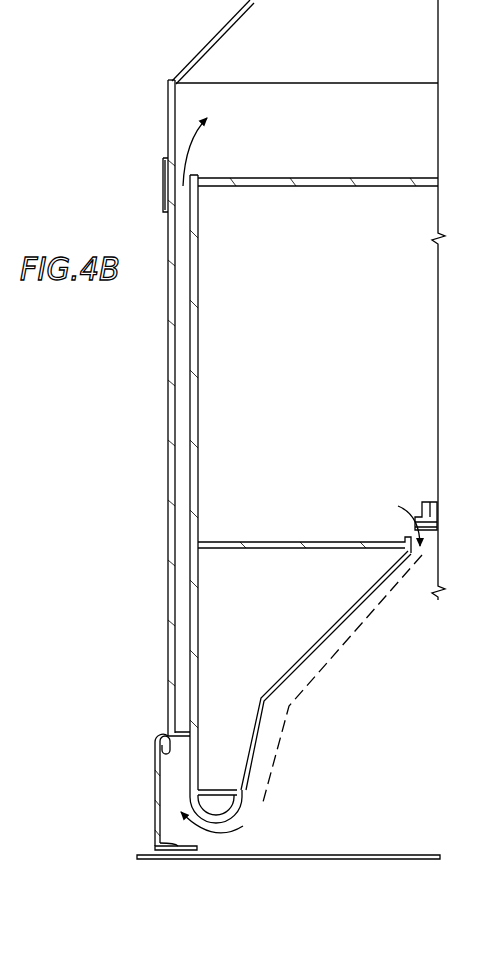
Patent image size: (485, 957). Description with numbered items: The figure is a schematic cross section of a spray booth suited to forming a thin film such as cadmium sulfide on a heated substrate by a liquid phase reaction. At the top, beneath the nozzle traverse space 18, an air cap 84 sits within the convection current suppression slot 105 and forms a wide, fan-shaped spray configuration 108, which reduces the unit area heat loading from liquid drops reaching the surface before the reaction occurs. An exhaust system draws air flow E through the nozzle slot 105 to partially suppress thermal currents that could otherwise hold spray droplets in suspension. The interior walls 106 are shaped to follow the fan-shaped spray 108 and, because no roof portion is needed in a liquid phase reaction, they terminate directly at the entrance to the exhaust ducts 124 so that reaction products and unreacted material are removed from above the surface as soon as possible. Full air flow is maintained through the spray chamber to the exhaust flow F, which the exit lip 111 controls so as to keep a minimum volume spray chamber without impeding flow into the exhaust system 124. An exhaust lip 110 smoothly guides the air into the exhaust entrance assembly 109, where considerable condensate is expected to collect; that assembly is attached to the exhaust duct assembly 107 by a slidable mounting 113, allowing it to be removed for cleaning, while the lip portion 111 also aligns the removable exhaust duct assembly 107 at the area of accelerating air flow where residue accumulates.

The nozzle traverse space 18 is at (331, 345).
The air cap 84 is at (428, 500).
The convection current suppression slot 105 is at (402, 557).
The interior walls 106 is at (322, 638).
The exhaust duct assembly 107 is at (168, 620).
The spray configuration 108 is at (337, 640).
The exhaust entrance assembly 109 is at (155, 778).
The exhaust lip 110 is at (177, 845).
The exit lip 111 is at (223, 823).
The slidable mounting 113 is at (160, 742).
The exhaust ducts 124 is at (190, 170).
The air flow E is at (399, 518).
The exhaust flow F is at (220, 826).